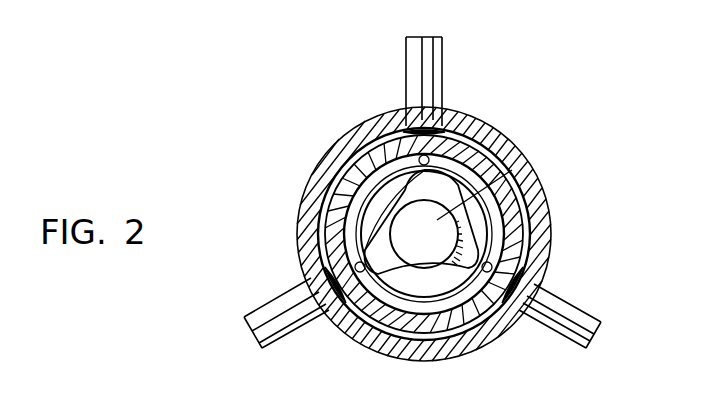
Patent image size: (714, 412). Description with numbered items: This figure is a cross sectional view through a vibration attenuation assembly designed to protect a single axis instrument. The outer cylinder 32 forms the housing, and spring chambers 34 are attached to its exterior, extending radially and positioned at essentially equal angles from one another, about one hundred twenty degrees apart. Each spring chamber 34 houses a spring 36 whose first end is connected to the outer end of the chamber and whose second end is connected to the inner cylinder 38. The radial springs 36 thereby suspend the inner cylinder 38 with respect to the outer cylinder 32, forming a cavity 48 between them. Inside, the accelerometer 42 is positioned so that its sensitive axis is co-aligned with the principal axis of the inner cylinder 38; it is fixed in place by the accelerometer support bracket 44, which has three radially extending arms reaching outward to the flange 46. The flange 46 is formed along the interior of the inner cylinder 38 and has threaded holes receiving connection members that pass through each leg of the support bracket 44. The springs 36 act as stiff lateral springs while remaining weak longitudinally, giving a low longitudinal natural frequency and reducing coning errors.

The outer cylinder 32 is at (312, 254).
The spring chambers 34 is at (444, 54).
The springs 36 is at (403, 126).
The inner cylinder 38 is at (310, 206).
The accelerometer 42 is at (430, 182).
The accelerometer support bracket 44 is at (455, 136).
The flange 46 is at (493, 232).
The cavity 48 is at (518, 257).